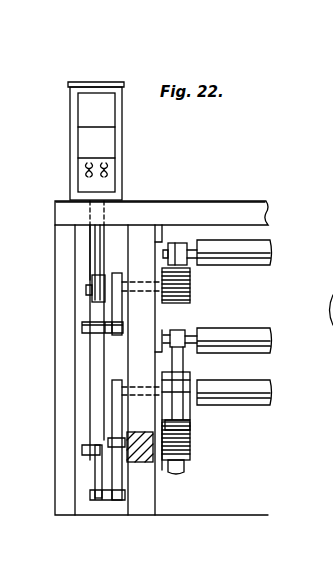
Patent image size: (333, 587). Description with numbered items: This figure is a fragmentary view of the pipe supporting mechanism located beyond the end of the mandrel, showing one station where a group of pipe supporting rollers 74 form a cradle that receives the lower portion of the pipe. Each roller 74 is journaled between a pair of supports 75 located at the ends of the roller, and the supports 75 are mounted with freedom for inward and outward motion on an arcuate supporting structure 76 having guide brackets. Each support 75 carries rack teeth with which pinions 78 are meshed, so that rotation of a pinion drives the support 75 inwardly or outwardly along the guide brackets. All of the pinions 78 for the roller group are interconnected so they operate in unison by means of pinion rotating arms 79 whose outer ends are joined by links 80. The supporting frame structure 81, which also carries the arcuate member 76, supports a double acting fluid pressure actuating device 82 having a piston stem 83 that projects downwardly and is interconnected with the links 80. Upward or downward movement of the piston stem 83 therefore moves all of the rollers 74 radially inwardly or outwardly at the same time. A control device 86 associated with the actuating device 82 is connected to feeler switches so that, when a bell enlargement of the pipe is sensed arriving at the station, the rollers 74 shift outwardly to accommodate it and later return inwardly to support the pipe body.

The pipe supporting rollers 74 is at (252, 258).
The supports 75 is at (175, 243).
The arcuate supporting structure 76 is at (140, 242).
The pinions 78 is at (190, 298).
The pinion rotating arms 79 is at (122, 314).
The links 80 is at (98, 475).
The supporting frame structure 81 is at (187, 203).
The double acting fluid pressure actuating device 82 is at (123, 172).
The piston stem 83 is at (90, 255).
The control device 86 is at (100, 140).